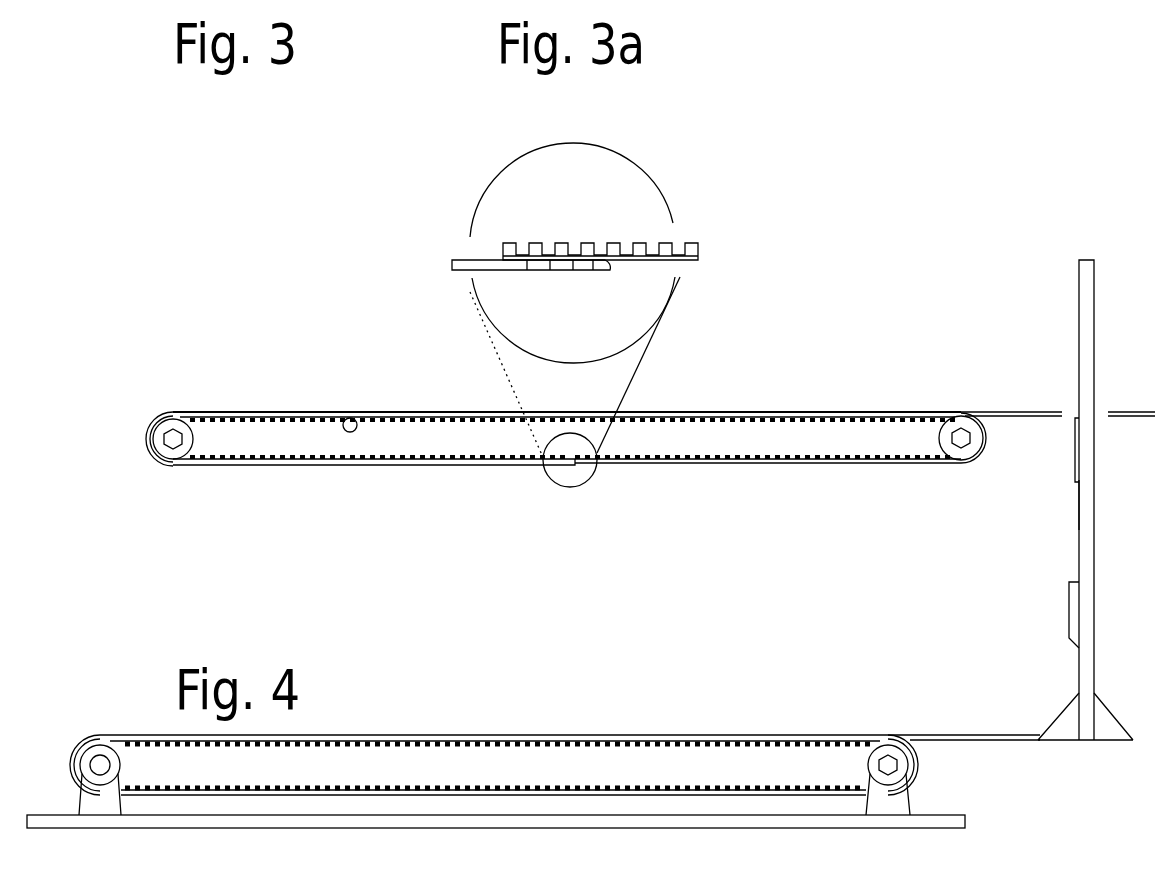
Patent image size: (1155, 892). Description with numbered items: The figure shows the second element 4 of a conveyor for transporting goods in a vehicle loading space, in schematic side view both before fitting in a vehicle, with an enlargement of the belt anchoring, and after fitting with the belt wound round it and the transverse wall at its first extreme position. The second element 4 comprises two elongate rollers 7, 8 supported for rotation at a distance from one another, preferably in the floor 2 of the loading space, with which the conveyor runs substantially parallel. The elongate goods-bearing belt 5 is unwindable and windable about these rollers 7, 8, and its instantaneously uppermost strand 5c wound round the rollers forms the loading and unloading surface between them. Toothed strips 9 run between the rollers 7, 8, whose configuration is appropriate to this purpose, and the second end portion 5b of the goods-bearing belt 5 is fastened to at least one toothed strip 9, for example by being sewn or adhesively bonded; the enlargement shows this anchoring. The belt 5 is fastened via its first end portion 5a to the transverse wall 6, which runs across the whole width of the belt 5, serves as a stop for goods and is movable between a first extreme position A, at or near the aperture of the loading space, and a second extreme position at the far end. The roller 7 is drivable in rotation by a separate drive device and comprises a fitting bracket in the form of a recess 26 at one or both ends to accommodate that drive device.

In FIG. 4, the floor 2 is at (75, 822).
In FIG. 3, the second element 4 is at (181, 473).
In FIG. 4, the second element 4 is at (128, 728).
In FIG. 3, the goods-bearing belt 5 is at (397, 410).
In FIG. 3A, the goods-bearing belt 5 is at (460, 251).
In FIG. 4, the goods-bearing belt 5 is at (990, 730).
In FIG. 4, the first end portion 5a is at (1011, 737).
In FIG. 3, the second end portion 5b is at (542, 466).
In FIG. 3A, the second end portion 5b is at (560, 271).
In FIG. 4, the uppermost strand 5c is at (518, 732).
In FIG. 3, the wall 6 is at (1085, 357).
In FIG. 4, the wall 6 is at (1087, 660).
In FIG. 3, the roller 7 is at (961, 423).
In FIG. 4, the roller 7 is at (907, 750).
In FIG. 3, the roller 8 is at (172, 421).
In FIG. 4, the roller 8 is at (92, 750).
In FIG. 3, the toothed strip 9 is at (356, 420).
In FIG. 3A, the toothed strip 9 is at (687, 245).
In FIG. 3, the recess 26 is at (961, 447).
In FIG. 4, the recess 26 is at (893, 765).
In FIG. 3, the first extreme position A is at (1088, 507).